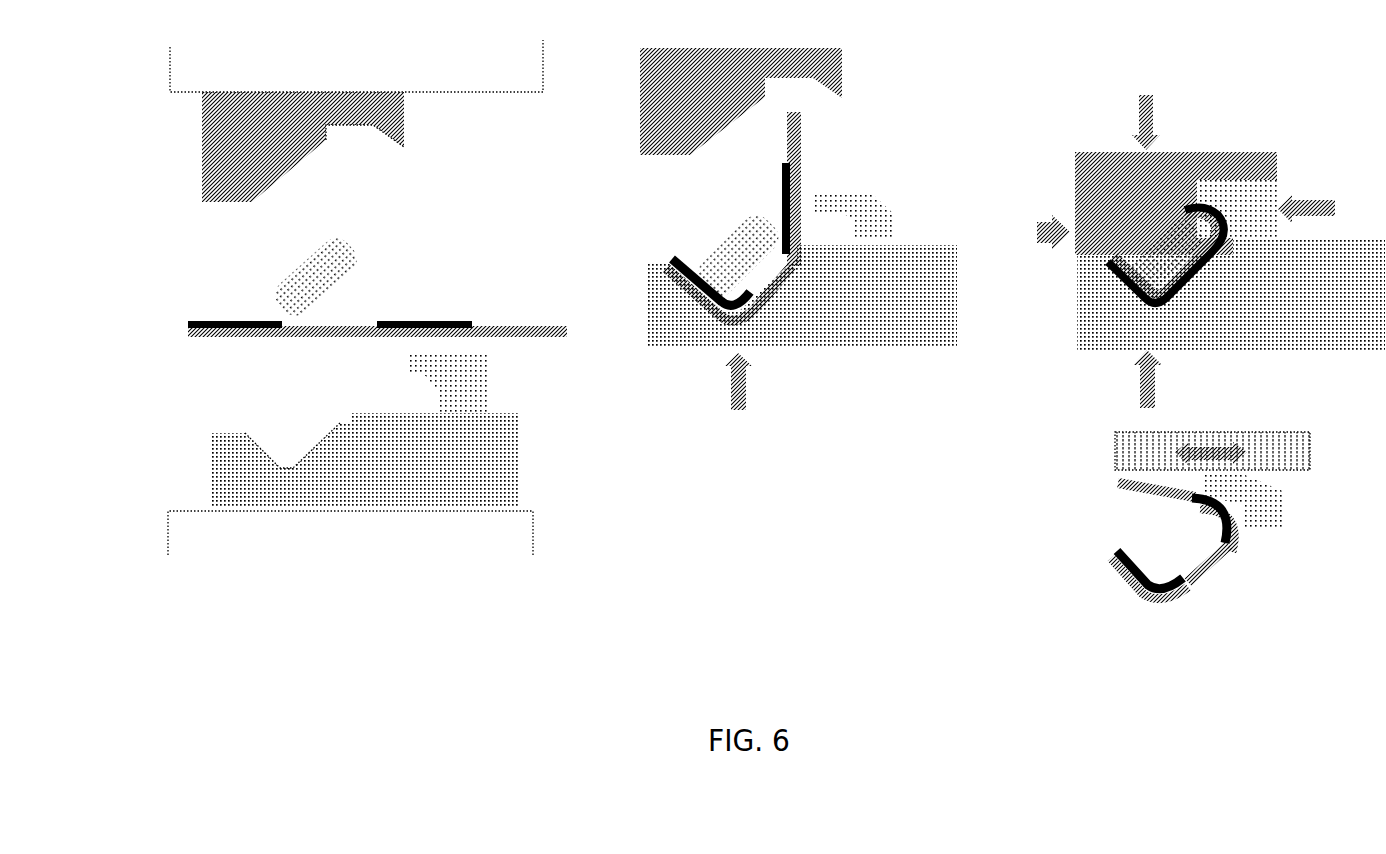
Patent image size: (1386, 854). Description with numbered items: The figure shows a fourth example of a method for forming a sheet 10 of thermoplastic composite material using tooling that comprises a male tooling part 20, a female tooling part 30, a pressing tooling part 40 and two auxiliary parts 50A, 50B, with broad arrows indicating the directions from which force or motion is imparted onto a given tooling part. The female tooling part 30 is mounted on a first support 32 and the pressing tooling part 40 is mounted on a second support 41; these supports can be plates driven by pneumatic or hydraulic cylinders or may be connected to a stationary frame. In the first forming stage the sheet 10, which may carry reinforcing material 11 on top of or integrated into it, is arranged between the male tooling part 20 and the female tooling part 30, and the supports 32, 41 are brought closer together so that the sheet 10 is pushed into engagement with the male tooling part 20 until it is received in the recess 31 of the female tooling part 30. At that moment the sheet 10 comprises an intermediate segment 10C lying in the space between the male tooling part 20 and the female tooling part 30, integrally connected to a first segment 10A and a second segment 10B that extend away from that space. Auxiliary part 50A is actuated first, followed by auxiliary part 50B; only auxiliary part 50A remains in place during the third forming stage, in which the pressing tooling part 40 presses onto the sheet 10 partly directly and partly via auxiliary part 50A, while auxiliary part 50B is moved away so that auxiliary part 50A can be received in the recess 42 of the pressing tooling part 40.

The sheet 10 is at (355, 337).
The first segment 10A is at (672, 257).
The second segment 10B is at (790, 192).
The intermediate segment 10C is at (770, 275).
The reinforcing material 11 is at (453, 323).
The male tooling part 20 is at (280, 282).
The female tooling part 30 is at (497, 488).
The recess 31 is at (302, 462).
The first support 32 is at (480, 565).
The pressing tooling part 40 is at (388, 110).
The second support 41 is at (485, 72).
The recess 42 is at (347, 133).
The auxiliary part 50A is at (473, 390).
The auxiliary part 50B is at (1273, 450).